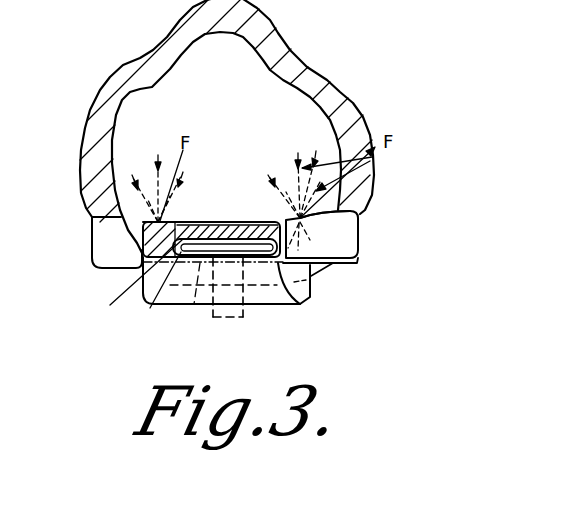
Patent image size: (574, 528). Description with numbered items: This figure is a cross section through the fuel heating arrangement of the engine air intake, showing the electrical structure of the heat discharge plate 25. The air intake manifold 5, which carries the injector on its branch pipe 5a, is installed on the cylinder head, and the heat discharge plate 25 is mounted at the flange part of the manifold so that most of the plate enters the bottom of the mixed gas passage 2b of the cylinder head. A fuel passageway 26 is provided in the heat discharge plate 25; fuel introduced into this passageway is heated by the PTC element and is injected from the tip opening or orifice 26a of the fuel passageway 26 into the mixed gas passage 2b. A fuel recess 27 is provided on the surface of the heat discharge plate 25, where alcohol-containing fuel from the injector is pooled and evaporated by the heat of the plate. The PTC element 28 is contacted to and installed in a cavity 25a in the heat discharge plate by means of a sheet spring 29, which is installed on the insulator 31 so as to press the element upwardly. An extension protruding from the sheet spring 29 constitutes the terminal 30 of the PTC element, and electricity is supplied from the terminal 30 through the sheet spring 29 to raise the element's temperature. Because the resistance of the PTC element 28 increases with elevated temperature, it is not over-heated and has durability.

The mixed gas passage 2b is at (270, 110).
The air intake manifold 5 is at (345, 80).
The branch pipe 5a is at (298, 58).
The heat discharge plate 25 is at (268, 222).
The cavity 25a is at (127, 283).
The fuel passageway 26 is at (140, 257).
The tip opening or orifice 26a is at (158, 222).
The fuel recess 27 is at (222, 224).
The PTC element 28 is at (301, 303).
The sheet spring 29 is at (221, 295).
The terminal 30 is at (250, 313).
The insulator 31 is at (154, 289).